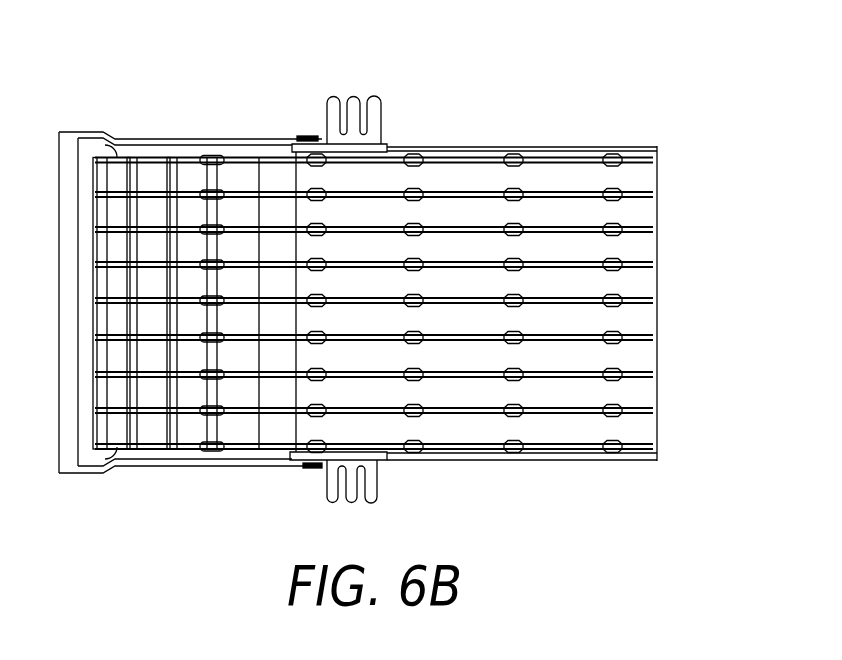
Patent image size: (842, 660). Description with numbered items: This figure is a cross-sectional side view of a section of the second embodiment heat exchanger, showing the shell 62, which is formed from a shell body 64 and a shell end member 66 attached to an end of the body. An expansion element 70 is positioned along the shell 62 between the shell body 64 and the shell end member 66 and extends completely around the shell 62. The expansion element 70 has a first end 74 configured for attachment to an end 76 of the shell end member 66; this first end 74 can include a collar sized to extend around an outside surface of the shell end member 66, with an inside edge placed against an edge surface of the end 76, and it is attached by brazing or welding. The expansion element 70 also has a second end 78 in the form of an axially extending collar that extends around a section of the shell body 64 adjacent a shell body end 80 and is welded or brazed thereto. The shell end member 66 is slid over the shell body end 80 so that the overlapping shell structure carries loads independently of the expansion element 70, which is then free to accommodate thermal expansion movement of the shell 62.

The shell 62 is at (603, 133).
The shell body 64 is at (485, 143).
The shell end member 66 is at (200, 138).
The expansion element 70 is at (393, 100).
The first end 74 is at (288, 127).
The end 76 is at (309, 468).
The second end 78 is at (397, 468).
The shell body end 80 is at (292, 463).